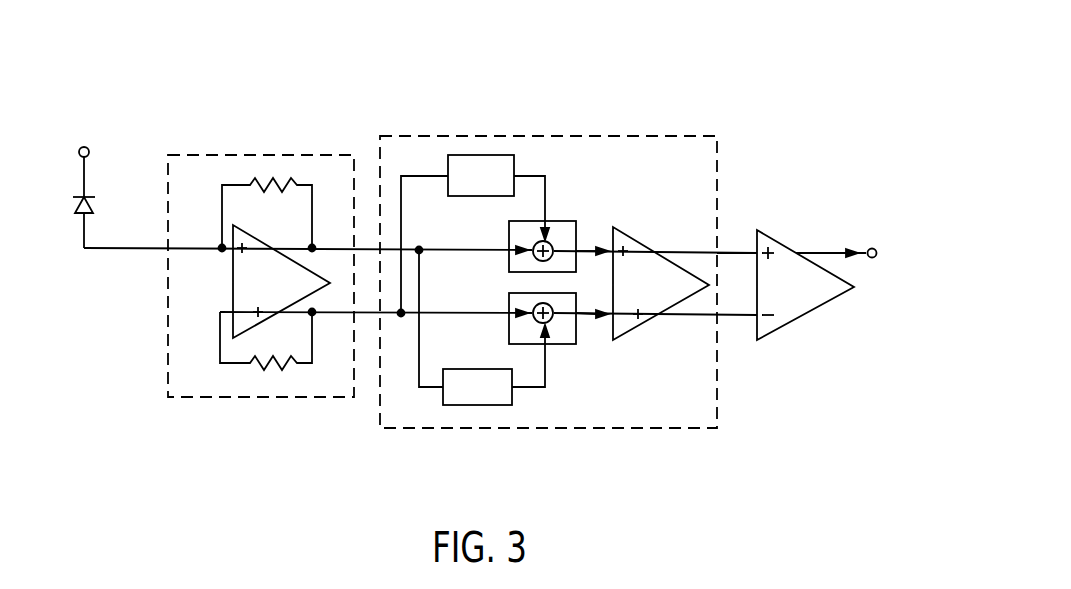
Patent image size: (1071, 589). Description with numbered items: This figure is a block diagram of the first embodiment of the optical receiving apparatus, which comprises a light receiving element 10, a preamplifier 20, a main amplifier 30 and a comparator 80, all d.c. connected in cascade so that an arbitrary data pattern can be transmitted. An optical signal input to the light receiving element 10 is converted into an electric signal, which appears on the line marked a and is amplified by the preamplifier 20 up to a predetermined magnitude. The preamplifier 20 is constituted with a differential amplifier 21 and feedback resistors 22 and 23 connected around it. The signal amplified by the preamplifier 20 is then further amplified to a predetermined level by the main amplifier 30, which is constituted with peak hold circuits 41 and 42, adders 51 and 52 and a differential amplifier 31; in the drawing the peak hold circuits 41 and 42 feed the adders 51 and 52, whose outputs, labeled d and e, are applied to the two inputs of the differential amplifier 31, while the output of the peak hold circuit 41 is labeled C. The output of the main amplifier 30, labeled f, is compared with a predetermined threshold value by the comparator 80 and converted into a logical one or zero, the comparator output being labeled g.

The light receiving element 10 is at (78, 213).
The photodiode output signal a is at (117, 250).
The preamplifier 20 is at (200, 155).
The differential amplifier 21 is at (233, 295).
The feedback resistor 22 is at (291, 186).
The feedback resistor 23 is at (272, 367).
The peak hold circuit 41 is at (485, 155).
The peak hold circuit 42 is at (463, 405).
The adder 51 is at (560, 221).
The adder 52 is at (563, 345).
The peak hold output signal C is at (535, 177).
The adder output signal d is at (590, 250).
The adder output signal e is at (583, 317).
The main amplifier 30 is at (682, 136).
The differential amplifier 31 is at (648, 318).
The main amp output signal f is at (736, 248).
The comparator output signal g is at (824, 247).
The comparator 80 is at (760, 342).